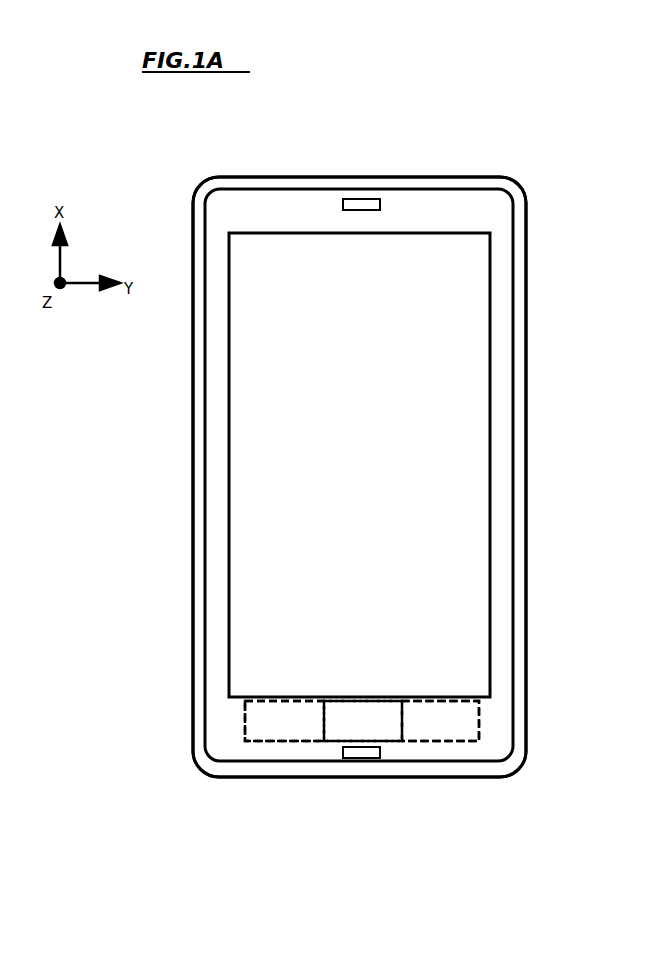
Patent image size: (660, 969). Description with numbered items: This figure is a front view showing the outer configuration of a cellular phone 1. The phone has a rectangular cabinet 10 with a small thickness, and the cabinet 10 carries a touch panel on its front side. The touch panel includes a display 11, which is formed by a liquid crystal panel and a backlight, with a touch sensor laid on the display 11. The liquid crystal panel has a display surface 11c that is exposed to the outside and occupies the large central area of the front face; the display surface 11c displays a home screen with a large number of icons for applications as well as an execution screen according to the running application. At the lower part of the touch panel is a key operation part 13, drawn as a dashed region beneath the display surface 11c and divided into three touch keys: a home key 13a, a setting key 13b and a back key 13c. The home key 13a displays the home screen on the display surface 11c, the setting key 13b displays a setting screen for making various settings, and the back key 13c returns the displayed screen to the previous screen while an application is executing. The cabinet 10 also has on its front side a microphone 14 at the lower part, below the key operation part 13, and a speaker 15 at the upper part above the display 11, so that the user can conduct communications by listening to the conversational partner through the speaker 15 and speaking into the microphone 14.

The cellular phone 1 is at (537, 168).
The cabinet 10 is at (526, 465).
The display 11 is at (490, 357).
The display surface 11c is at (252, 315).
The key operation part 13 is at (470, 725).
The home key 13a is at (287, 745).
The setting key 13b is at (377, 729).
The back key 13c is at (447, 742).
The microphone 14 is at (360, 758).
The speaker 15 is at (367, 199).